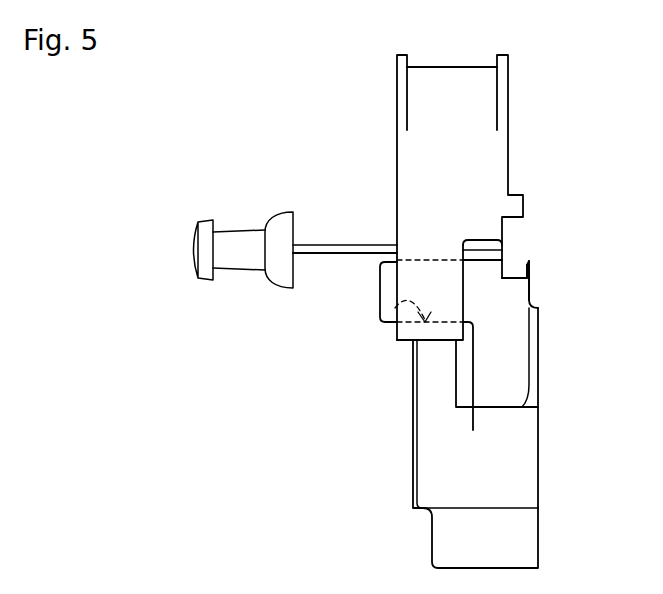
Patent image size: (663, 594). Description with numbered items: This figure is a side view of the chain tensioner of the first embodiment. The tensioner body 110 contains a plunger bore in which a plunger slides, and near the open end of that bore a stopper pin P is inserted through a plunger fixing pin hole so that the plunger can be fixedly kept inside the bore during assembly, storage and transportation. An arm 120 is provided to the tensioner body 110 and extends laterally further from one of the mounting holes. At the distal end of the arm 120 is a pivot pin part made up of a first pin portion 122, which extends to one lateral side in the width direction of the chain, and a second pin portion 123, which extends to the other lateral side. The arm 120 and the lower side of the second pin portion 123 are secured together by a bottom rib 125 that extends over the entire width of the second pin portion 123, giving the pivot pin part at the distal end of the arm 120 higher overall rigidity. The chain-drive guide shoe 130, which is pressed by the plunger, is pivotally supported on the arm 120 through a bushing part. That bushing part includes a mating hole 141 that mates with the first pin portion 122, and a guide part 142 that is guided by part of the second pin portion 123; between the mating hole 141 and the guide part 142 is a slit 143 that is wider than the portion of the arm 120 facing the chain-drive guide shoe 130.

The tensioner body 110 is at (432, 398).
The arm 120 is at (505, 360).
The first pin portion 122 is at (380, 293).
The second pin portion 123 is at (530, 283).
The bottom rib 125 is at (520, 320).
The chain-drive guide shoe 130 is at (397, 187).
The mating hole 141 is at (395, 308).
The guide part 142 is at (515, 265).
The slit 143 is at (478, 243).
The stopper pin P is at (337, 243).